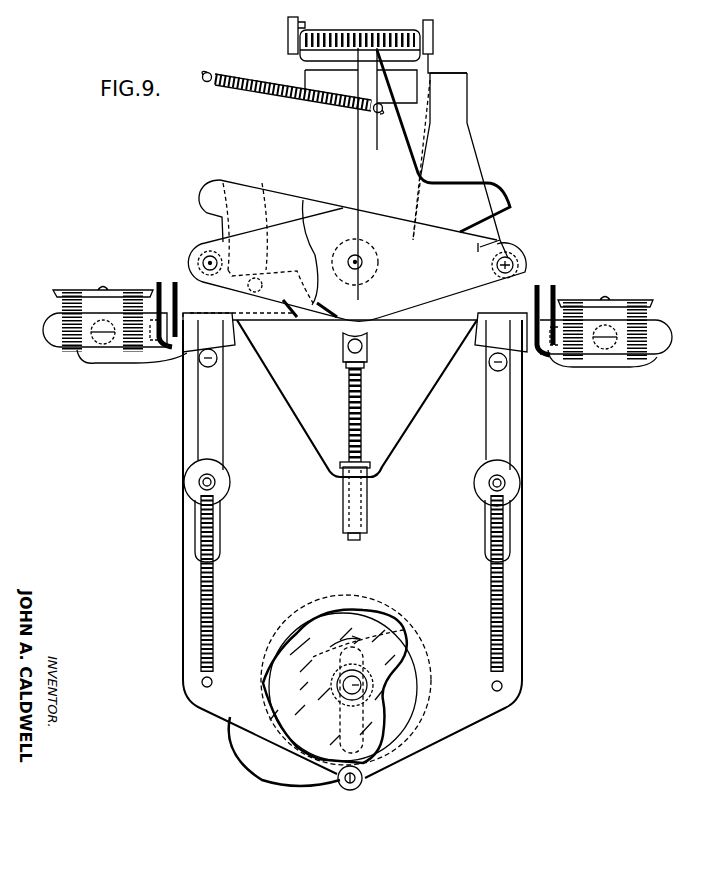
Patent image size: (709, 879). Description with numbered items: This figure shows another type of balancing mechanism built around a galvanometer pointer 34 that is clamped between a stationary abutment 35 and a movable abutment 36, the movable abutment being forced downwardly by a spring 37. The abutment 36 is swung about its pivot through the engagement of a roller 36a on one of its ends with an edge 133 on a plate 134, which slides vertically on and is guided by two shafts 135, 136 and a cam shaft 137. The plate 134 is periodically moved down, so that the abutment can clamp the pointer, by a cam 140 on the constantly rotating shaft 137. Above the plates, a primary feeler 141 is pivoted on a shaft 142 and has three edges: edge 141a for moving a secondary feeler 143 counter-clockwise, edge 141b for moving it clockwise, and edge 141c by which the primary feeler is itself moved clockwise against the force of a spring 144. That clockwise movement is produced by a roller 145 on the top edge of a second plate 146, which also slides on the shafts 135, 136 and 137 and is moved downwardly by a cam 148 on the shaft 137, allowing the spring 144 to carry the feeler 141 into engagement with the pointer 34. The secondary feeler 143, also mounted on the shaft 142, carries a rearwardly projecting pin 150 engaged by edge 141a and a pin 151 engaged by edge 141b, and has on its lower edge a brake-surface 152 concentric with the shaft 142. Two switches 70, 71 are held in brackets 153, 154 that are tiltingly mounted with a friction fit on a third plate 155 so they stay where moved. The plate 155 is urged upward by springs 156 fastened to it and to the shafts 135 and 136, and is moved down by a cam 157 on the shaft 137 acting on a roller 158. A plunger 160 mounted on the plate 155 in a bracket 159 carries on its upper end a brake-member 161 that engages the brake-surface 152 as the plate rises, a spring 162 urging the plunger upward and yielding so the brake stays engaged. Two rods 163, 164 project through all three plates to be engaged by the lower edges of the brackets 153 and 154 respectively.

The galvanometer pointer 34 is at (347, 60).
The stationary abutment 35 is at (308, 82).
The movable abutment 36 is at (291, 34).
The roller 36a is at (430, 33).
The spring 37 is at (383, 38).
The switch 70 is at (52, 333).
The switch 71 is at (668, 343).
The edge 133 is at (432, 70).
The plate 134 is at (452, 137).
The shaft 135 is at (204, 482).
The shaft 136 is at (505, 483).
The cam shaft 137 is at (370, 690).
The cam 140 is at (338, 602).
The primary feeler 141 is at (368, 137).
The edge 141a is at (203, 220).
The edge 141b is at (500, 190).
The edge 141c is at (226, 181).
The shaft 142 is at (356, 260).
The secondary feeler 143 is at (483, 250).
The spring 144 is at (276, 100).
The roller 145 is at (263, 181).
The plate 146 is at (196, 303).
The cam 148 is at (252, 757).
The pin 150 is at (206, 262).
The pin 151 is at (513, 265).
The brake-surface 152 is at (298, 214).
The bracket 153 is at (139, 355).
The bracket 154 is at (607, 357).
The third plate 155 is at (185, 619).
The spring 156 is at (205, 578).
The cam 157 is at (378, 624).
The roller 158 is at (363, 778).
The bracket 159 is at (362, 508).
The plunger 160 is at (362, 400).
The brake-member 161 is at (368, 354).
The spring 162 is at (348, 398).
The rod 163 is at (205, 361).
The rod 164 is at (492, 364).